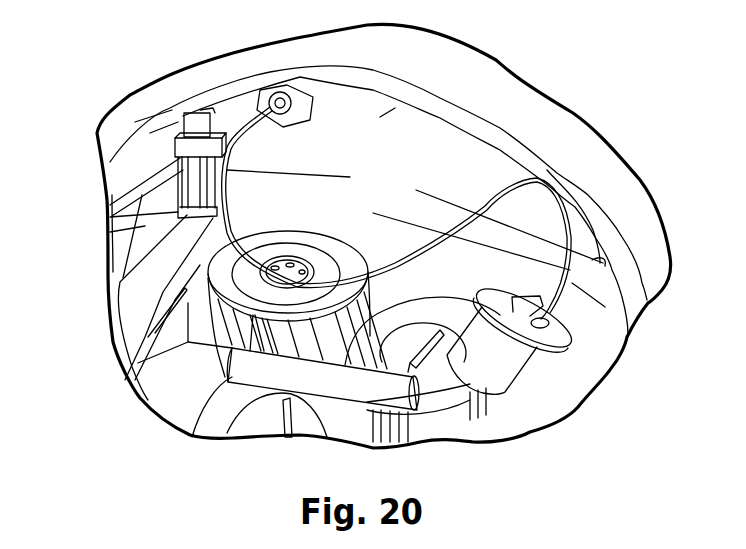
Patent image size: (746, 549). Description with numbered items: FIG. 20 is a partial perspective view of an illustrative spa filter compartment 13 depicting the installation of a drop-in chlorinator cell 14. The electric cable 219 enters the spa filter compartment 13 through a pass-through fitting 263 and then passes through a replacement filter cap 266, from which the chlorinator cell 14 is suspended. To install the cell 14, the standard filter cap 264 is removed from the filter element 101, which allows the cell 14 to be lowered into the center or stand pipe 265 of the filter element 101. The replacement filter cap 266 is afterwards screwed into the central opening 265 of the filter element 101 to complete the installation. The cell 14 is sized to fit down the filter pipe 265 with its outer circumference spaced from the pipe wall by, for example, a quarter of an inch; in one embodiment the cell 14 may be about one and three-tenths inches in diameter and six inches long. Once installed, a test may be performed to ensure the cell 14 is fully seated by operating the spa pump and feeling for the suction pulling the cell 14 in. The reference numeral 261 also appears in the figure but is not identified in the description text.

The spa filter compartment 13 is at (407, 220).
The drop-in chlorinator cell 14 is at (243, 385).
The filter element 101 is at (253, 290).
The electric cable 219 is at (243, 133).
The vane 261 is at (450, 388).
The pass-through fitting 263 is at (283, 92).
The standard filter cap 264 is at (273, 418).
The stand pipe 265 is at (180, 201).
The replacement filter cap 266 is at (555, 342).